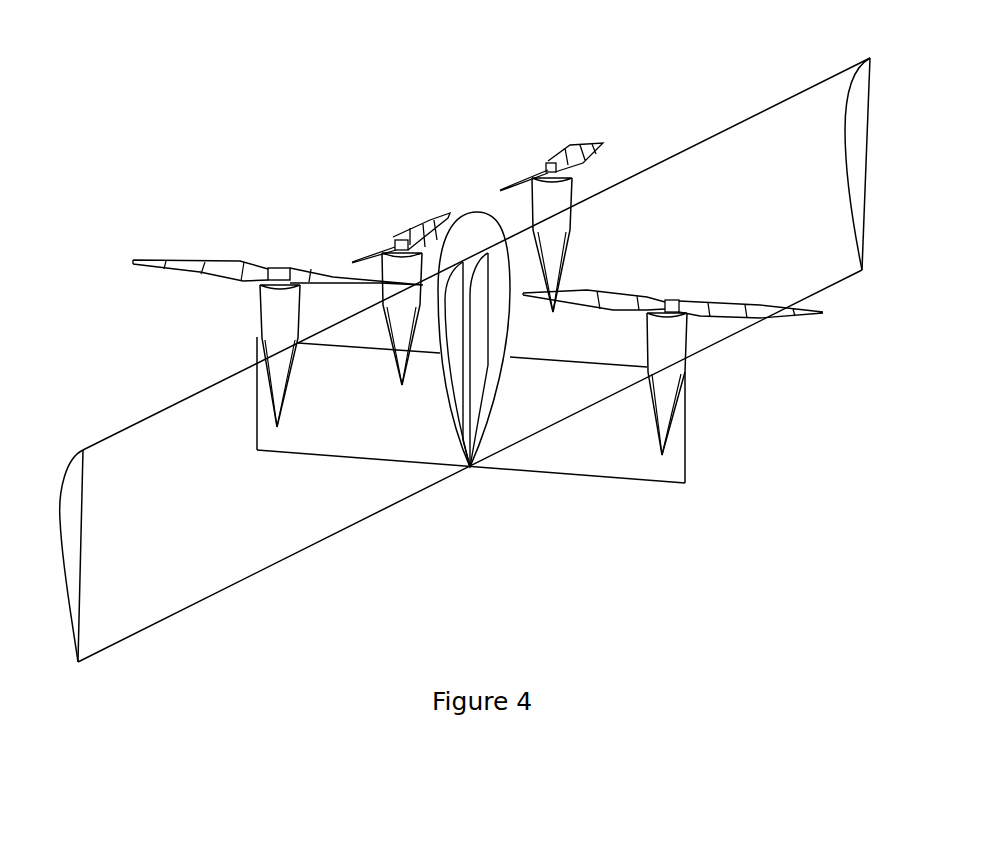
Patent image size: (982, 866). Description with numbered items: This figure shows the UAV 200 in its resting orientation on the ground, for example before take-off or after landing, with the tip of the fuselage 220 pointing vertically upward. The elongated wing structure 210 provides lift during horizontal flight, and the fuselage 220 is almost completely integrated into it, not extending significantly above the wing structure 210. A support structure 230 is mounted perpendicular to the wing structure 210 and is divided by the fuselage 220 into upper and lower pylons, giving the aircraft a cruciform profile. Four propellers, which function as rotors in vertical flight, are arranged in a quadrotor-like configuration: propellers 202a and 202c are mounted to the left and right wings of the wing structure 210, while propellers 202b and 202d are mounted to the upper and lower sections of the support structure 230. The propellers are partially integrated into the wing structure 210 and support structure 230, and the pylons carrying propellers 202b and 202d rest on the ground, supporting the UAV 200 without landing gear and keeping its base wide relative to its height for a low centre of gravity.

The UAV 200 is at (210, 79).
The wing structure 210 is at (137, 452).
The fuselage 220 is at (473, 232).
The support structure 230 is at (582, 455).
The propeller 202a is at (397, 246).
The propeller 202b is at (269, 268).
The propeller 202c is at (547, 175).
The propeller 202d is at (680, 307).